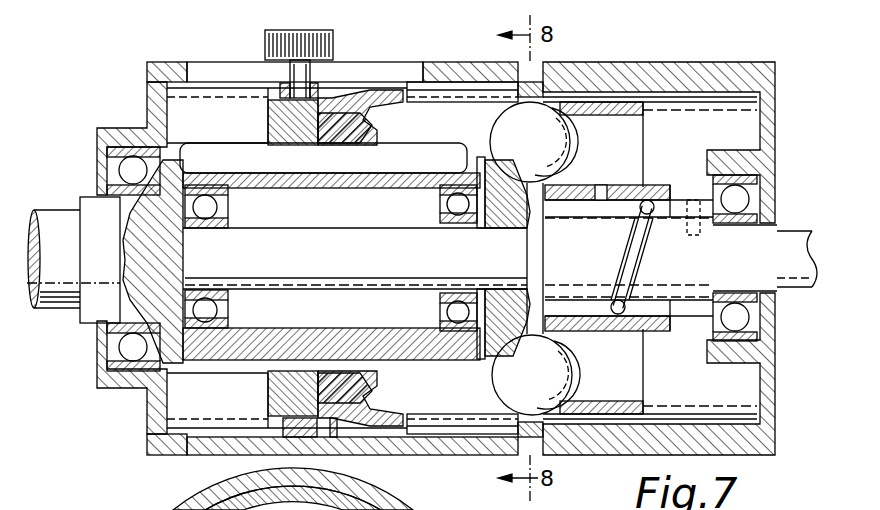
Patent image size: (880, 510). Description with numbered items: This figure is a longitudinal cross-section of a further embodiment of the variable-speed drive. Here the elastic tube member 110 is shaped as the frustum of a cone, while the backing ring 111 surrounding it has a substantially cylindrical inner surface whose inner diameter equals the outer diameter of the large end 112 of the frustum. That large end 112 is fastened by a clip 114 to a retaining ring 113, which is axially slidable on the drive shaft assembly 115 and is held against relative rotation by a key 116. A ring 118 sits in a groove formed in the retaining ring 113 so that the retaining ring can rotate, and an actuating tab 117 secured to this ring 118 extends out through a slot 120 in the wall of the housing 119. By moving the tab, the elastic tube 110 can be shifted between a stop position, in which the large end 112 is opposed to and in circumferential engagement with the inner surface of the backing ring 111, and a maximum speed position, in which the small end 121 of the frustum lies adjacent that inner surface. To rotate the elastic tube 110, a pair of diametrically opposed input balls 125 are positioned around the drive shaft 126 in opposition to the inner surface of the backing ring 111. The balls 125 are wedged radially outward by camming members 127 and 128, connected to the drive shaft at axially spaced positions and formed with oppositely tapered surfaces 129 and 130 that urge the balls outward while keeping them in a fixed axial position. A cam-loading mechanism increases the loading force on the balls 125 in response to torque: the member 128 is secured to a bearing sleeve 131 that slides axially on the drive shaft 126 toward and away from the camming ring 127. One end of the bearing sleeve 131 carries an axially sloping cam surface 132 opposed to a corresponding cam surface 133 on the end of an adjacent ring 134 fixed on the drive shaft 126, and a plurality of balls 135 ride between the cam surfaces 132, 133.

The elastic tube member 110 is at (448, 90).
The backing ring 111 is at (538, 82).
The large end 112 is at (398, 100).
The retaining ring 113 is at (268, 116).
The clip 114 is at (352, 97).
The drive shaft assembly 115 is at (55, 305).
The key 116 is at (197, 155).
The actuating tab 117 is at (285, 32).
The ring 118 is at (273, 82).
The housing 119 is at (677, 43).
The slot 120 is at (190, 74).
The small end 121 is at (645, 132).
The input balls 125 is at (502, 128).
The drive shaft 126 is at (352, 275).
The camming member 127 is at (520, 213).
The camming member 128 is at (583, 185).
The tapered surface 129 is at (527, 182).
The tapered surface 130 is at (570, 143).
The bearing sleeve 131 is at (580, 320).
The cam surface 132 is at (636, 252).
The cam surface 133 is at (658, 247).
The ring 134 is at (683, 308).
The balls 135 is at (650, 197).